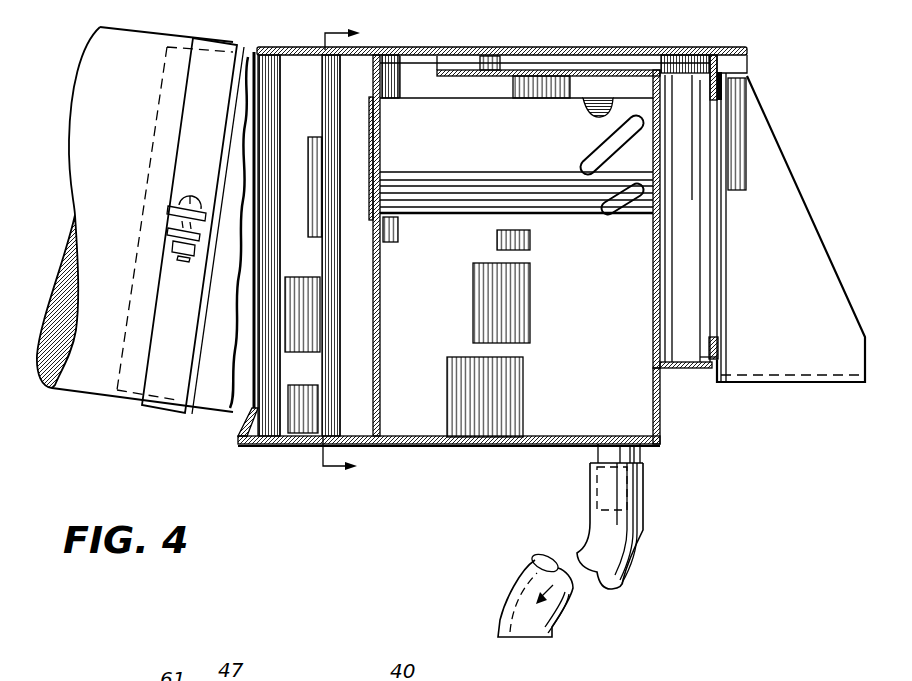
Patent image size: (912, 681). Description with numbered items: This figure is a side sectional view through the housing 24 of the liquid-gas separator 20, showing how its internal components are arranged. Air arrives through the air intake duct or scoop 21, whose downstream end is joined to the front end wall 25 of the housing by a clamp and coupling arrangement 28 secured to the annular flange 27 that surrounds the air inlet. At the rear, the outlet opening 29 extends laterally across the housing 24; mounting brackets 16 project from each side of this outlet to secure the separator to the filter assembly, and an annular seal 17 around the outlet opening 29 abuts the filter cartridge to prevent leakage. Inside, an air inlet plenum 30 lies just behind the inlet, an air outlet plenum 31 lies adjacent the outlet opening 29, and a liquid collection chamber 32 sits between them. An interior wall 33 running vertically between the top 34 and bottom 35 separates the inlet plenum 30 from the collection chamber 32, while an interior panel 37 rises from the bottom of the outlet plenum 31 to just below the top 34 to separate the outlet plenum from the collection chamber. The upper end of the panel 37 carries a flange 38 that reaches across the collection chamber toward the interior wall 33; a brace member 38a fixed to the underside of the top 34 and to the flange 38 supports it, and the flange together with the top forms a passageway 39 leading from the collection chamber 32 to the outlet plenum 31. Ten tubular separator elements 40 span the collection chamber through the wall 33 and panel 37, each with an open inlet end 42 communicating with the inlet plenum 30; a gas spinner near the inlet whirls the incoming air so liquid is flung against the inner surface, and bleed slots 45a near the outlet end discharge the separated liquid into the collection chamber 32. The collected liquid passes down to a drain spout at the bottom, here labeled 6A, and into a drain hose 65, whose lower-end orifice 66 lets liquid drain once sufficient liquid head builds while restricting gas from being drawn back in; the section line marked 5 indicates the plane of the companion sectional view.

The section line 5- 5 is at (351, 253).
The drain nipple 6A is at (643, 456).
The mounting brackets 16 is at (788, 193).
The annular seal 17 is at (722, 350).
The liquid-gas separator 20 is at (662, 44).
The air intake duct or scoop 21 is at (75, 404).
The housing 24 is at (660, 410).
The front end wall 25 is at (243, 428).
The annular flange 27 is at (222, 412).
The clamp and coupling arrangement 28 is at (218, 42).
The outlet opening 29 is at (720, 103).
The air inlet plenum 30 is at (299, 245).
The air outlet plenum 31 is at (707, 272).
The liquid collection chamber 32 is at (456, 327).
The interior wall 33 is at (382, 325).
The top 34 is at (522, 50).
The bottom 35 is at (448, 445).
The interior panel 37 is at (653, 325).
The flange 38 is at (463, 73).
The brace member 38a is at (400, 60).
The passageway 39 is at (568, 63).
The tubular separator elements 40 is at (498, 228).
The open inlet end 42 is at (368, 215).
The bleed slots 45a is at (600, 150).
The drain hose 65 is at (637, 555).
The orifice 66 is at (523, 637).